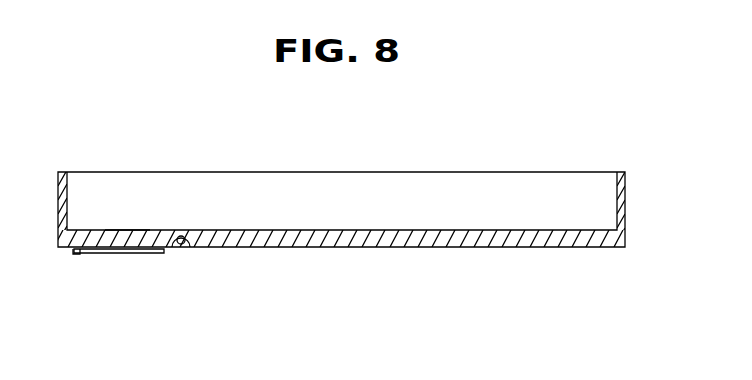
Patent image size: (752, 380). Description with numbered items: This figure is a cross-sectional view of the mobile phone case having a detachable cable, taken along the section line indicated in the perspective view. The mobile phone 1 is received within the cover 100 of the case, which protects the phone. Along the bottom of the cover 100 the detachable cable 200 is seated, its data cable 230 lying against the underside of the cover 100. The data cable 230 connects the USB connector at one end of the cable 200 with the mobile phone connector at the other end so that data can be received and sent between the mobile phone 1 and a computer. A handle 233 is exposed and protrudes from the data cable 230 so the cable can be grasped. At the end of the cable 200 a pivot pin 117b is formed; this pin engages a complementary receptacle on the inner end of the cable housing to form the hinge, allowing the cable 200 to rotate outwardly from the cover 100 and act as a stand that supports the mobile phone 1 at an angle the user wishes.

The mobile phone 1 is at (336, 182).
The cover 100 is at (399, 257).
The pivot pin 117b is at (181, 245).
The detachable cable 200 is at (113, 266).
The data cable 230 is at (128, 232).
The handle 233 is at (77, 256).